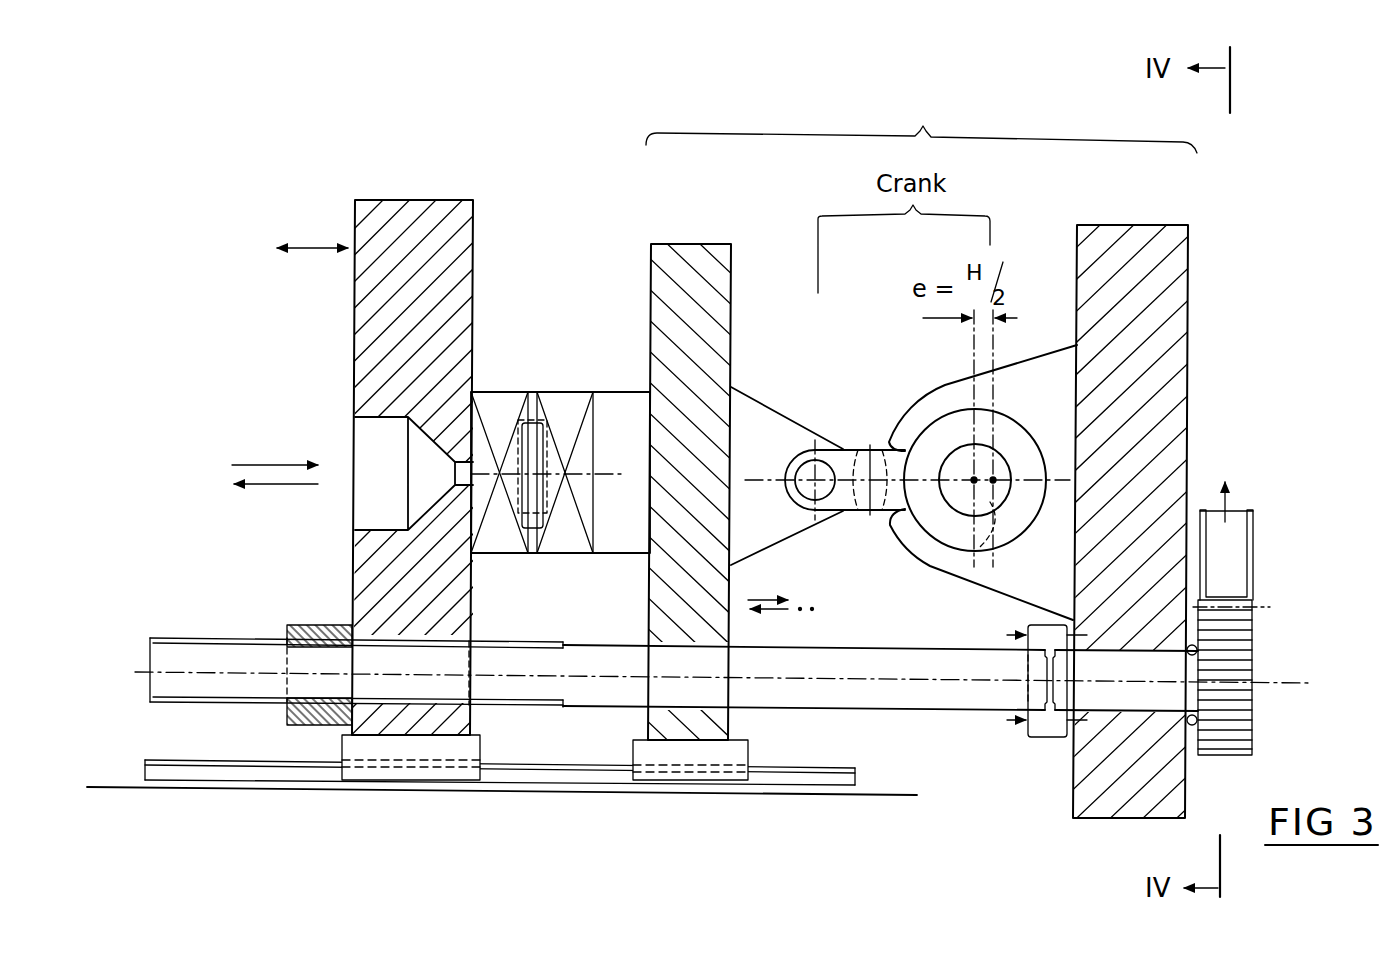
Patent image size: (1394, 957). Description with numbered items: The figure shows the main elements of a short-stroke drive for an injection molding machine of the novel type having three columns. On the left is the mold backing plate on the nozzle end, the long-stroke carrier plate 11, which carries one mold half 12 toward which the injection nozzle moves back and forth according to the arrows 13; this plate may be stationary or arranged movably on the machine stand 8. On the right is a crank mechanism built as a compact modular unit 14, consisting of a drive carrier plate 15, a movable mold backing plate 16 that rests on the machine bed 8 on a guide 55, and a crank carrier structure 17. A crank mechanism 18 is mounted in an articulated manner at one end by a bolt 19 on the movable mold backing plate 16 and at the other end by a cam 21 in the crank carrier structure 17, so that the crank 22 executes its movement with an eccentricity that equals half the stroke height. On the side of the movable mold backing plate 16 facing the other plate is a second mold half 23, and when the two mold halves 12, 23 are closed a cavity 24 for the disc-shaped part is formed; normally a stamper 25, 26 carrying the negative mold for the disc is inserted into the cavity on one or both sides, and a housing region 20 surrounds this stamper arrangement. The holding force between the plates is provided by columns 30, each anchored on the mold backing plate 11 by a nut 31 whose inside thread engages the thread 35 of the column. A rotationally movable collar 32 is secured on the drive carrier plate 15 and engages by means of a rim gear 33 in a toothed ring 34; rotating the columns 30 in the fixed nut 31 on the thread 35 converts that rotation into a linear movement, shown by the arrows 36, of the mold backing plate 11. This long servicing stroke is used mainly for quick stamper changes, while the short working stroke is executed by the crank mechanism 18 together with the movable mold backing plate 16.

The machine stand 8 is at (118, 786).
The long-stroke carrier plate 11 is at (460, 200).
The mold half 12 is at (560, 460).
The arrows 13 is at (240, 462).
The modular unit 14 is at (921, 118).
The drive carrier plate 15 is at (1180, 265).
The movable mold backing plate 16 is at (696, 238).
The crank carrier structure 17 is at (1031, 353).
The crank mechanism 18 is at (853, 392).
The bolt 19 is at (808, 455).
The spring housing 20 is at (613, 472).
The cam 21 is at (981, 566).
The crank 22 is at (818, 479).
The mold half 23 is at (583, 393).
The cavity 24 is at (540, 400).
The stamper 25 is at (522, 513).
The stamper 26 is at (547, 514).
The column 30 is at (922, 700).
The nut 31 is at (310, 623).
The rotationally movable collar 32 is at (1043, 754).
The rim gear 33 is at (1268, 677).
The toothed ring 34 is at (1258, 598).
The thread 35 is at (193, 638).
The arrows 36 is at (320, 247).
The guide 55 is at (819, 770).